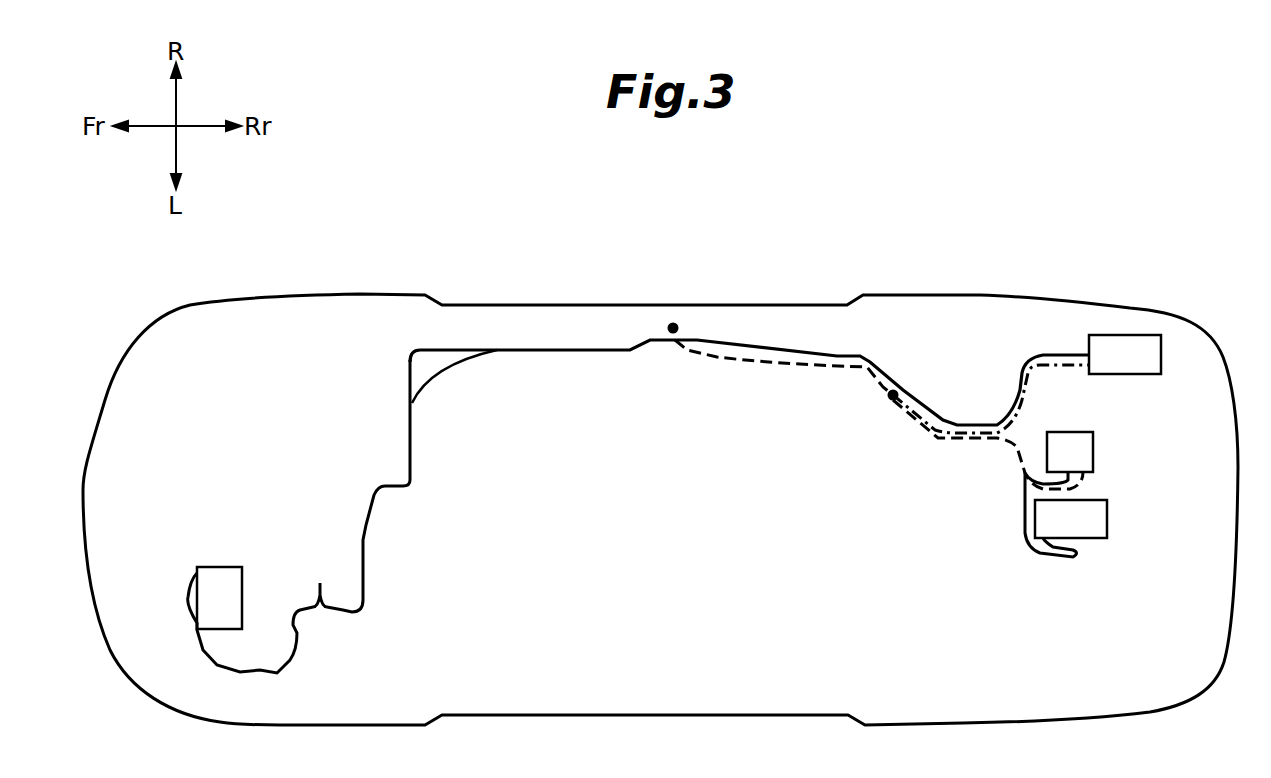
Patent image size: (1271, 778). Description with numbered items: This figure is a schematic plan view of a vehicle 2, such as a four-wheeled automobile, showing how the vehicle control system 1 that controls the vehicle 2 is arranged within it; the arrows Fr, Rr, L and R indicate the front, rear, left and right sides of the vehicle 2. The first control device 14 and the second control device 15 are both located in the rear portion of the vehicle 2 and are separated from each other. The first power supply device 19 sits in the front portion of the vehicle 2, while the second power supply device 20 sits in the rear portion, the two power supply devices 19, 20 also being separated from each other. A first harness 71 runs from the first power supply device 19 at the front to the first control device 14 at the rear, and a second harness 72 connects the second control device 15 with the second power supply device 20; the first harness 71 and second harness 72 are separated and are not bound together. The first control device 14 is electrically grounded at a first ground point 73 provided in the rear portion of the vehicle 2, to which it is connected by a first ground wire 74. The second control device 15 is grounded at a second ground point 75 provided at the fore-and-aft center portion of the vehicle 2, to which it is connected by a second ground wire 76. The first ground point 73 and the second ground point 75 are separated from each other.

The vehicle control system 1 is at (1135, 326).
The vehicle 2 is at (133, 280).
The first control device 14 is at (1143, 374).
The second control device 15 is at (1085, 432).
The first power supply device 19 is at (242, 590).
The second power supply device 20 is at (1107, 522).
The first harness 71 is at (587, 350).
The second harness 72 is at (1040, 558).
The first ground point 73 is at (893, 395).
The first ground wire 74 is at (1030, 383).
The second ground point 75 is at (673, 328).
The second ground wire 76 is at (777, 365).